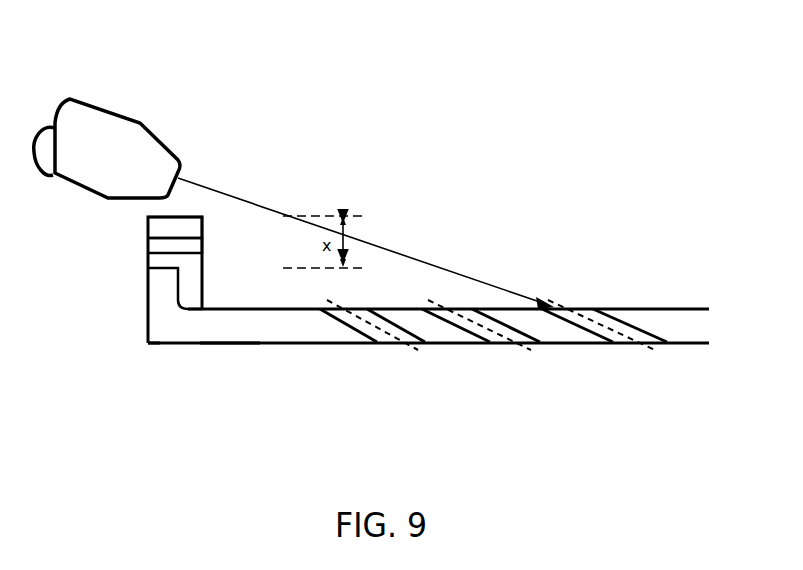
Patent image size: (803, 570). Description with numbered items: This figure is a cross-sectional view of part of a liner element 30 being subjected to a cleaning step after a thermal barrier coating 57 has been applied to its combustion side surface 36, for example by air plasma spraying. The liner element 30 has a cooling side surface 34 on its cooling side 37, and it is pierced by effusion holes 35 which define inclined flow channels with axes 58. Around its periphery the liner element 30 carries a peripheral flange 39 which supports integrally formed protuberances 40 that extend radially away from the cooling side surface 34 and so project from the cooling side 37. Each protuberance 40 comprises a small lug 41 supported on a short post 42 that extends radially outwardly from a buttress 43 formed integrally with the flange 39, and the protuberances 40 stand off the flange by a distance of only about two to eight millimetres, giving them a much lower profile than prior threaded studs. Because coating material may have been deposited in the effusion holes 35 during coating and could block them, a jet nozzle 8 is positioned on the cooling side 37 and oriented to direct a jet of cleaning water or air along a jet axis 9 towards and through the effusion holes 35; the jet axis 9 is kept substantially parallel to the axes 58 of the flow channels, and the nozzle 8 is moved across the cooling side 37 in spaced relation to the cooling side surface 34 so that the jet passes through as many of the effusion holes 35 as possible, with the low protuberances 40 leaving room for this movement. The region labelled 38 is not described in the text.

The jet nozzle 8 is at (105, 125).
The jet axis 9 is at (472, 278).
The liner element 30 is at (124, 351).
The cooling side surface 34 is at (685, 293).
The effusion holes 35 is at (358, 328).
The combustion side surface 36 is at (167, 345).
The cooling side 37 is at (680, 233).
The outcoupling region 38 is at (593, 372).
The peripheral flange 39 is at (163, 300).
The protuberances 40 is at (114, 272).
The lug 41 is at (158, 227).
The post 42 is at (158, 247).
The buttress 43 is at (188, 278).
The thermal barrier coating 57 is at (228, 350).
The axes of the flow channels 58 is at (413, 347).